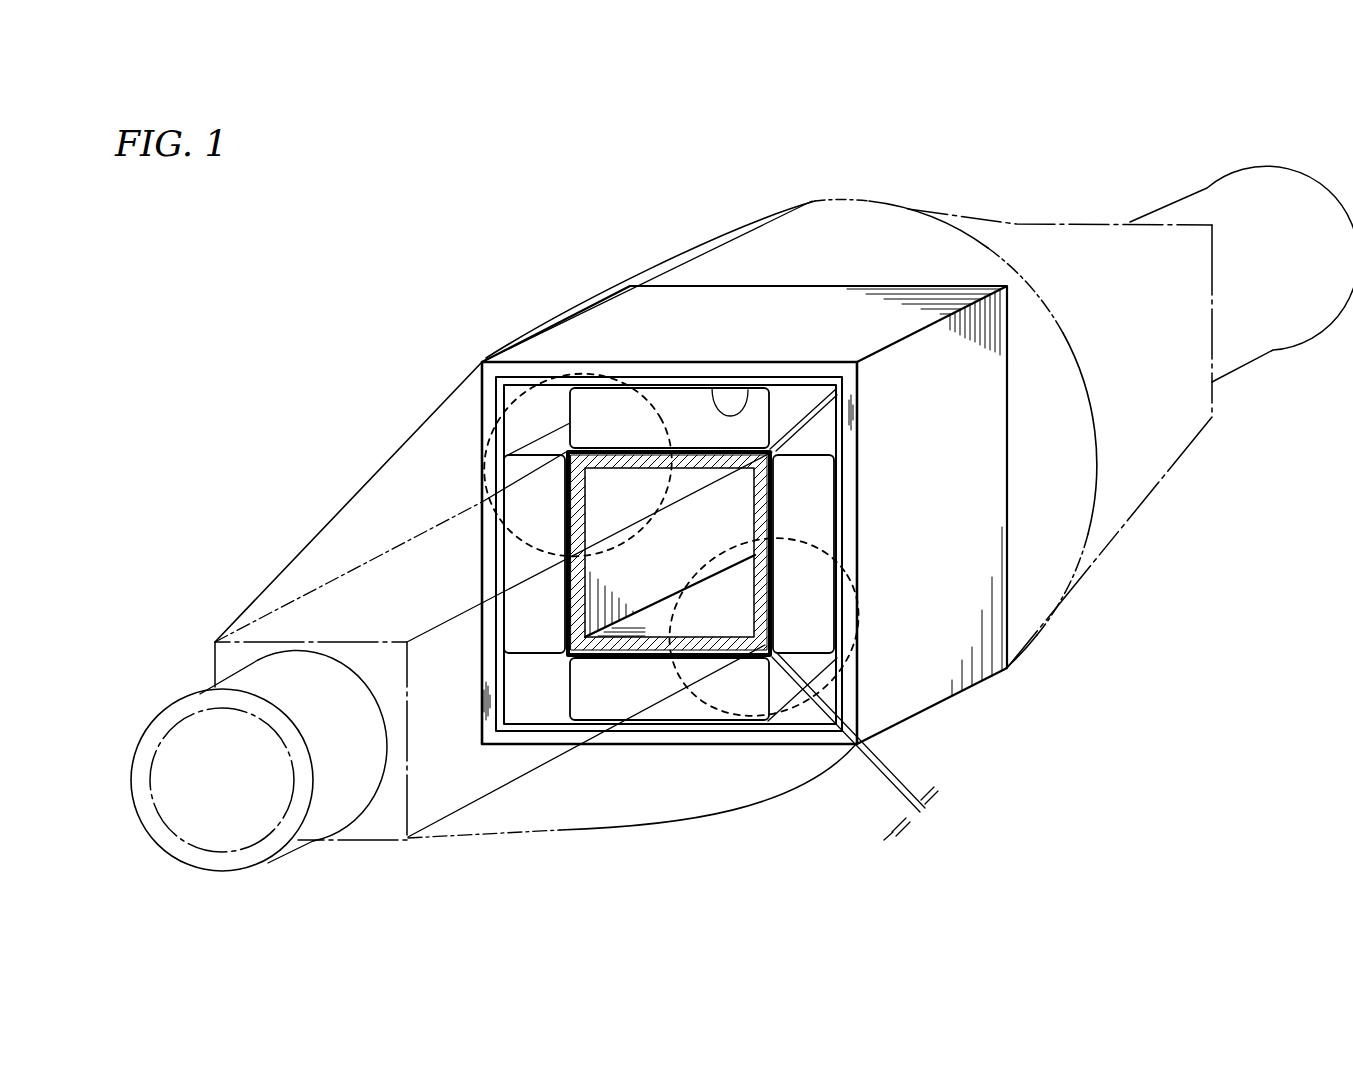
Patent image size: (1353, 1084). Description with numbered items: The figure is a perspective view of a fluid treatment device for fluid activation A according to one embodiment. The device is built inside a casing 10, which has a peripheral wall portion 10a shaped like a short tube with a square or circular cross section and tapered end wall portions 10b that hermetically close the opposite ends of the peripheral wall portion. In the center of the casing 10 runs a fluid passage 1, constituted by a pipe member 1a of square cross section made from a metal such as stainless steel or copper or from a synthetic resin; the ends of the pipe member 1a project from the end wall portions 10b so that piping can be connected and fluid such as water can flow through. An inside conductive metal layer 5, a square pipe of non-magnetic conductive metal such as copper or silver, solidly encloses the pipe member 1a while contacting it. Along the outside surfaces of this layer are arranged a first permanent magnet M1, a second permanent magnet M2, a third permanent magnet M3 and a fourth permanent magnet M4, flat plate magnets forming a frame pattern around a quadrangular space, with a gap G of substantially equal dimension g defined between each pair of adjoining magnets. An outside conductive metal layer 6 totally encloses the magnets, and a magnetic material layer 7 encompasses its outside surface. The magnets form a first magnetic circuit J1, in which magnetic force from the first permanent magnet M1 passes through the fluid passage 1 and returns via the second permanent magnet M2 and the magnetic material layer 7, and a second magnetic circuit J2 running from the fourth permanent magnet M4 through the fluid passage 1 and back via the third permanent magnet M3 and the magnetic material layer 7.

The fluid treatment device for fluid activation A is at (975, 172).
The casing 10 is at (872, 192).
The peripheral wall portion 10a is at (633, 287).
The tapered end wall portions 10b is at (423, 467).
The fluid passage 1 is at (648, 618).
The pipe member 1a is at (688, 445).
The inside conductive metal layer 5 is at (592, 662).
The outside conductive metal layer 6 is at (748, 390).
The magnetic material layer 7 is at (677, 372).
The first permanent magnet M1 is at (600, 412).
The second permanent magnet M2 is at (527, 627).
The third permanent magnet M3 is at (602, 693).
The fourth permanent magnet M4 is at (812, 495).
The gap G is at (806, 405).
The dimension of gap g is at (856, 747).
The first magnetic circuit J1 is at (545, 420).
The second magnetic circuit J2 is at (790, 715).